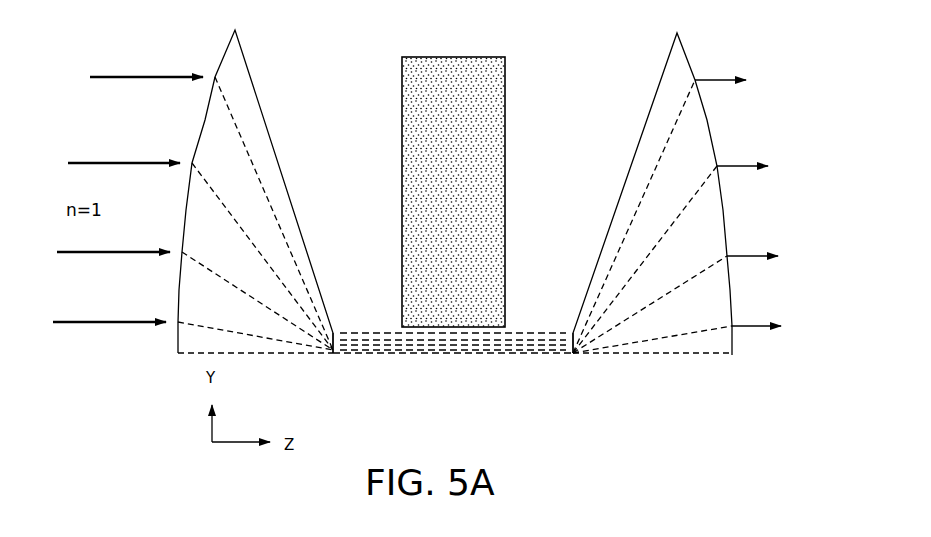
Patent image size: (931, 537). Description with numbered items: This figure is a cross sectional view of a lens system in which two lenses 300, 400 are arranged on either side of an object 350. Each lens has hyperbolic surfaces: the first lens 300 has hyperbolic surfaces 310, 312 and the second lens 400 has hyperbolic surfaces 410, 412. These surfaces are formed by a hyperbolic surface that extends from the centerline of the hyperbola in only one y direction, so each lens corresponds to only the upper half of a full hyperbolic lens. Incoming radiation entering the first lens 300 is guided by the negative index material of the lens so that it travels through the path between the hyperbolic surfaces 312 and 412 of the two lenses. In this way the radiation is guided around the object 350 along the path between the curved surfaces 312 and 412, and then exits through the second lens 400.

The lens 300 is at (231, 58).
The hyperbolic surface 310 is at (178, 342).
The hyperbolic surface 312 is at (348, 341).
The object 350 is at (455, 57).
The lens 400 is at (683, 60).
The hyperbolic surface 410 is at (732, 300).
The hyperbolic surface 412 is at (556, 346).